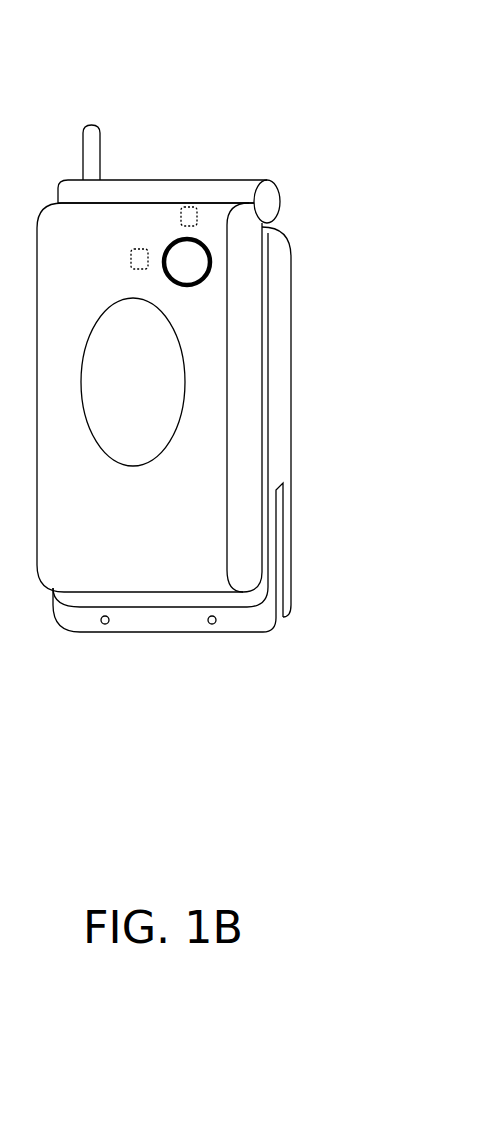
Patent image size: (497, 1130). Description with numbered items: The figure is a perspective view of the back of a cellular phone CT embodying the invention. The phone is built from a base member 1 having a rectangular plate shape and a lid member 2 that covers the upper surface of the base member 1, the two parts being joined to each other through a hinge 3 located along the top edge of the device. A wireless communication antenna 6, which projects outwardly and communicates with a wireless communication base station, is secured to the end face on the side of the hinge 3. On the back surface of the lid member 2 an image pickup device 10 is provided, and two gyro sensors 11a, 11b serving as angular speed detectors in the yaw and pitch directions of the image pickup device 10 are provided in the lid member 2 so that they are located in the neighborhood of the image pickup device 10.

The cellular phone CT is at (190, 147).
The base member 1 is at (292, 312).
The lid member 2 is at (260, 365).
The hinge 3 is at (280, 203).
The wireless communication antenna 6 is at (90, 123).
The image pickup device 10 is at (202, 260).
The gyro sensor 11a is at (193, 207).
The gyro sensor 11b is at (139, 248).